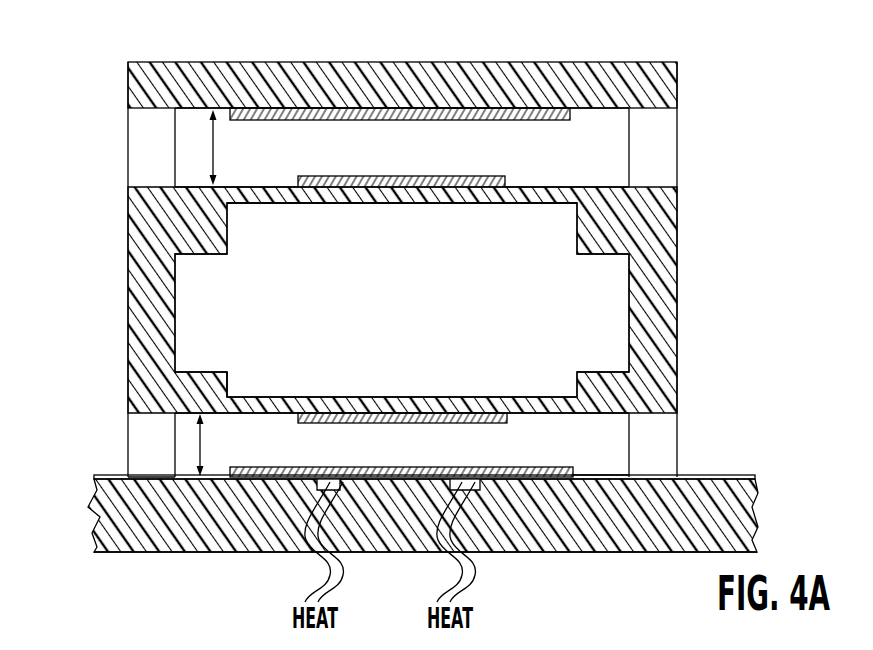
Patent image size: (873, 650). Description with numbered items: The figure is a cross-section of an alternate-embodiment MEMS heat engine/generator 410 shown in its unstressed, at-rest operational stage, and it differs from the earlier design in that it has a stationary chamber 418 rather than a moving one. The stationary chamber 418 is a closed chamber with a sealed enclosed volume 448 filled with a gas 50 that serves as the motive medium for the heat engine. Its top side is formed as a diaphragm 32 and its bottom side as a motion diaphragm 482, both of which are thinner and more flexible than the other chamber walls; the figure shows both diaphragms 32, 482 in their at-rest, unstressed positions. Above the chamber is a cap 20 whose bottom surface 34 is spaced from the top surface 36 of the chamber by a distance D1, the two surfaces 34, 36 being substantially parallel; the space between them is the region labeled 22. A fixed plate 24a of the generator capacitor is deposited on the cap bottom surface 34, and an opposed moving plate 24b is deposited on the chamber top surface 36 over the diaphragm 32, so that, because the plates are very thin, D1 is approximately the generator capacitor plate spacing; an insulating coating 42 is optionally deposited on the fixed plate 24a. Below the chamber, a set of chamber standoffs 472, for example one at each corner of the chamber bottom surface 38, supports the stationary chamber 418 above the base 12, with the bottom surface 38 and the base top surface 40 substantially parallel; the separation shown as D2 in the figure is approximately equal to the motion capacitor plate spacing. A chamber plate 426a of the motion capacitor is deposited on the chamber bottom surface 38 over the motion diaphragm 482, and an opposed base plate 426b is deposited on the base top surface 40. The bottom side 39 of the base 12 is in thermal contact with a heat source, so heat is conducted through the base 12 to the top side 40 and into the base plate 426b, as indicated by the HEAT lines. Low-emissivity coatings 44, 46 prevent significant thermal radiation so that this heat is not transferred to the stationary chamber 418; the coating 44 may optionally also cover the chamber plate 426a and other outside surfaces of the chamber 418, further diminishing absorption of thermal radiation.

The heat engine/generator 410 is at (192, 39).
The cap 20 is at (138, 62).
The gap between plates 22 is at (140, 142).
The fixed plate 24a is at (572, 117).
The moving plate 24b is at (505, 182).
The bottom surface 34 is at (184, 115).
The top surface 36 is at (184, 179).
The distance D1 is at (228, 147).
The electrically non-conductive coating 42 is at (484, 132).
The stationary chamber 418 is at (127, 235).
The diaphragm 32 is at (278, 203).
The sealed enclosed volume 448 is at (417, 311).
The gas 50 is at (247, 326).
The motion diaphragm 482 is at (265, 396).
The chamber bottom surface 38 is at (146, 419).
The chamber plate 426a is at (636, 413).
The chamber standoffs 472 is at (140, 445).
The second gap distance D2 is at (217, 445).
The base 12 is at (95, 523).
The bottom side 39 is at (192, 562).
The low-emissivity coating 46 is at (762, 470).
The low-emissivity coating 44 is at (540, 453).
The base plate 426b is at (575, 472).
The top surface 40 is at (122, 471).